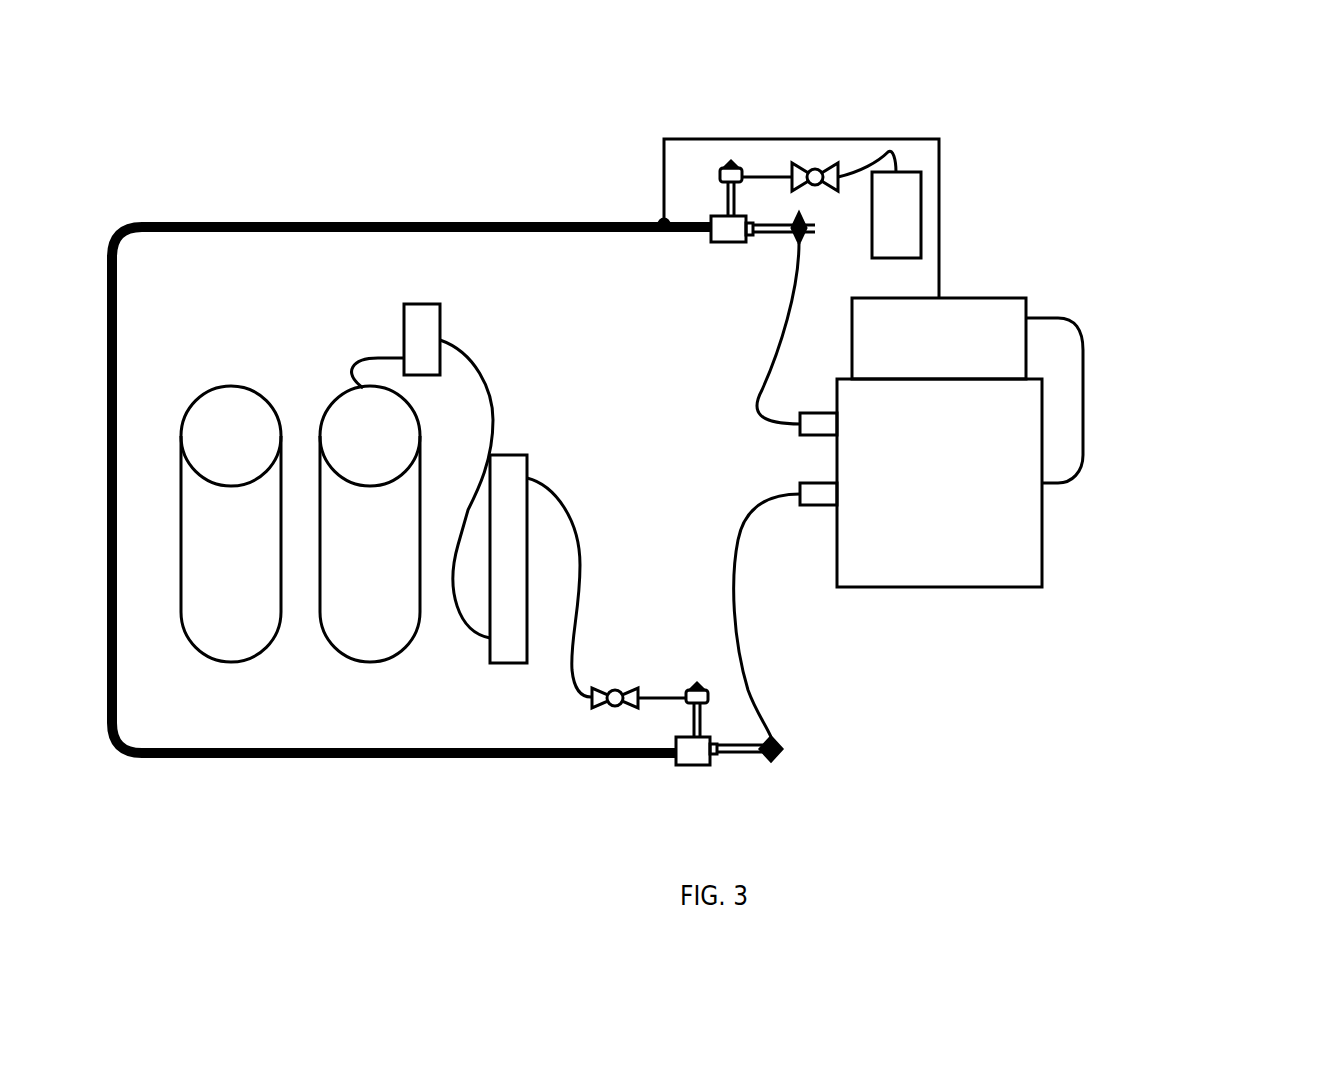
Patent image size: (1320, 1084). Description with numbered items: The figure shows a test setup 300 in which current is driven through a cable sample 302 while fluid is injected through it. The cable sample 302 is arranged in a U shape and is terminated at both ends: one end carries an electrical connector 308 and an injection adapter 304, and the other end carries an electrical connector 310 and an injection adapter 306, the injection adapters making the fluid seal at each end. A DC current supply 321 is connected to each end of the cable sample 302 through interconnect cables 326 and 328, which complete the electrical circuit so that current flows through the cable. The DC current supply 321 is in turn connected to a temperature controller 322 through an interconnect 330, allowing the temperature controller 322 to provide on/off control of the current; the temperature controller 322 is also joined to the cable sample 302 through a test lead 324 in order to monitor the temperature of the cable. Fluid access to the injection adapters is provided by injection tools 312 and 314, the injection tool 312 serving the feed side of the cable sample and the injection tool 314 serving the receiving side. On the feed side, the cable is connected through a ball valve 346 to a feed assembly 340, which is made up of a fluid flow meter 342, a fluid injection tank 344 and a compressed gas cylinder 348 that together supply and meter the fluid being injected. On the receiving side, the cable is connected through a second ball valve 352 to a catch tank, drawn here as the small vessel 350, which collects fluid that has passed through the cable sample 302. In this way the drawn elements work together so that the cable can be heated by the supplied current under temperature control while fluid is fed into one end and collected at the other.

The test setup 300 is at (1100, 189).
The cable sample 302 is at (330, 222).
The injection adapter 304 is at (690, 765).
The injection adapter 306 is at (725, 242).
The electrical connector 308 is at (738, 758).
The electrical connector 310 is at (778, 236).
The injection tool 312 is at (706, 690).
The injection tool 314 is at (728, 168).
The DC current supply 321 is at (968, 568).
The temperature controller 322 is at (965, 320).
The test lead 324 is at (664, 190).
The interconnect cable 326 is at (764, 408).
The interconnect cable 328 is at (737, 540).
The interconnect 330 is at (1078, 330).
The feed assembly 340 is at (291, 331).
The fluid flow meter 342 is at (505, 650).
The fluid injection tank 344 is at (378, 635).
The ball valve 346 is at (618, 690).
The compressed gas cylinder 348 is at (245, 635).
The sensor 350 is at (905, 210).
The ball valve 352 is at (818, 165).